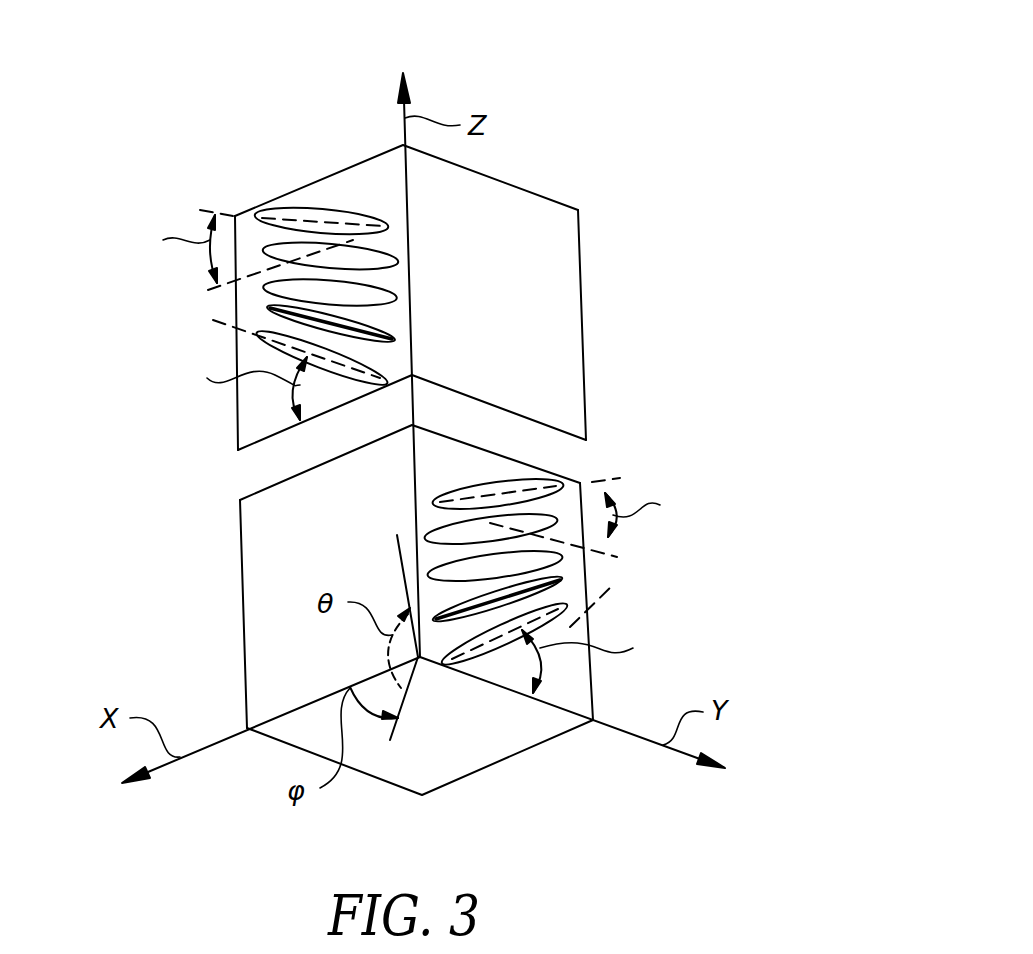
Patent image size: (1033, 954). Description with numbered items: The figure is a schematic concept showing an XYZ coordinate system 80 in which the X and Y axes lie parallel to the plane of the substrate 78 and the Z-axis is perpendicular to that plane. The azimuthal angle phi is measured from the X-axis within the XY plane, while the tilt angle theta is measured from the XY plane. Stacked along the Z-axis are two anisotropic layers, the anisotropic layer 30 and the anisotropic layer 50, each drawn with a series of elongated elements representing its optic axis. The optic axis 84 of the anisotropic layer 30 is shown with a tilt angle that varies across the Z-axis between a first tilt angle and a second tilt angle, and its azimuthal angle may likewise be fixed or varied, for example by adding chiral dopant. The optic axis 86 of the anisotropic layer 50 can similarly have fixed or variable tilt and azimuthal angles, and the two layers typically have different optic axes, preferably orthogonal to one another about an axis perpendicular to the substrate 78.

The XYZ coordinate system 80 is at (468, 83).
The anisotropic layer 30 is at (342, 182).
The optic axis 84 is at (267, 307).
The anisotropic layer 50 is at (580, 615).
The optic axis 86 is at (557, 575).
The substrate 78 is at (498, 742).